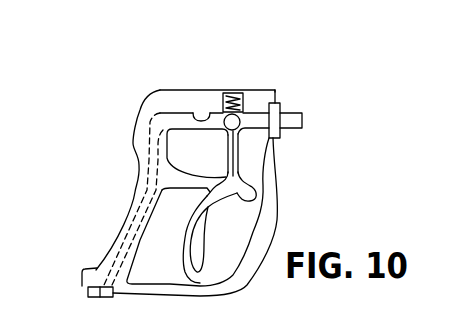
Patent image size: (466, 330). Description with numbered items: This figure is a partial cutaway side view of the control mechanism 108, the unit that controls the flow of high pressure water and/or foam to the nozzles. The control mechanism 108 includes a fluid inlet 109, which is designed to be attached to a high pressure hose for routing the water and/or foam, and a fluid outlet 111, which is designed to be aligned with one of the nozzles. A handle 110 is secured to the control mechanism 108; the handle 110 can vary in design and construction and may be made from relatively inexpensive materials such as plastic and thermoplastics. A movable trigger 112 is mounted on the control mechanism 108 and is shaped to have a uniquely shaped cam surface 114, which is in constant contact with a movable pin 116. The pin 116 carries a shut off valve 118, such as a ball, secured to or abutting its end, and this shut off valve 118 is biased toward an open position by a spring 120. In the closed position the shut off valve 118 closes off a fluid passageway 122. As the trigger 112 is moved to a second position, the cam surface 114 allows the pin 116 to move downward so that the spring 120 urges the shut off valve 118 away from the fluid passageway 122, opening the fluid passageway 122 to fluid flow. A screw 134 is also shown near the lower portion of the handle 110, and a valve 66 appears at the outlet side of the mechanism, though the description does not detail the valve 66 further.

The valve 66 is at (290, 105).
The control mechanism 108 is at (292, 71).
The fluid inlet 109 is at (102, 281).
The handle 110 is at (132, 213).
The fluid outlet 111 is at (295, 128).
The trigger 112 is at (196, 243).
The cam surface 114 is at (253, 200).
The pin 116 is at (238, 155).
The shut off valve 118 is at (242, 116).
The spring 120 is at (228, 92).
The fluid passageway 122 is at (208, 108).
The screw 134 is at (87, 289).